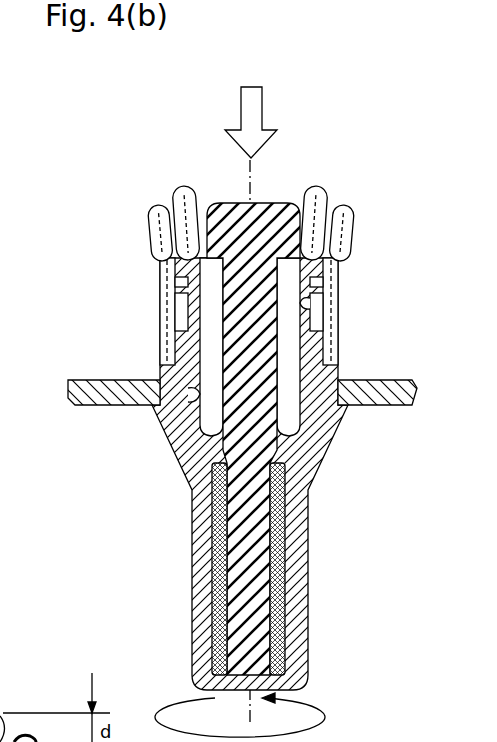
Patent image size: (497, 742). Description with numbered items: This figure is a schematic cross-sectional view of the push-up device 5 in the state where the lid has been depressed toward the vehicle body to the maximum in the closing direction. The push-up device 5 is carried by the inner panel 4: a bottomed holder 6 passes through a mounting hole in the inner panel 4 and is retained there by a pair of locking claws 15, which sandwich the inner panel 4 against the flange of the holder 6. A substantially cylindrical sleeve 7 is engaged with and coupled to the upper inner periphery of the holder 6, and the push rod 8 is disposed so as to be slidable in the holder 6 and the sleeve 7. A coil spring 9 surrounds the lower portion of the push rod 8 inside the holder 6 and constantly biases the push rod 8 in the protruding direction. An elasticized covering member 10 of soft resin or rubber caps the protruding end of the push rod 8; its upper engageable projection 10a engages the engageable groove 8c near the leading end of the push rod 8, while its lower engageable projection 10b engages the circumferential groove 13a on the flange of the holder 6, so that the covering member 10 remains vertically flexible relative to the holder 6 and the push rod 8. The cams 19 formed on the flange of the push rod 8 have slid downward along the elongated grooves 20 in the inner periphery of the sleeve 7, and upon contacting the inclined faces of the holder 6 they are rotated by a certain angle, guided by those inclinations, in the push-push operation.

The inner panel 4 is at (398, 408).
The push-up device 5 is at (385, 170).
The holder 6 is at (303, 622).
The sleeve 7 is at (325, 357).
The push rod 8 is at (270, 334).
The engageable groove 8c is at (327, 223).
The coil spring 9 is at (307, 552).
The covering member 10 is at (212, 417).
The engageable projection 10a is at (210, 203).
The engageable projection 10b is at (171, 311).
The circumferential groove 13a is at (324, 311).
The locking claws 15 is at (160, 440).
The cams 19 is at (173, 476).
The elongated grooves 20 is at (304, 305).